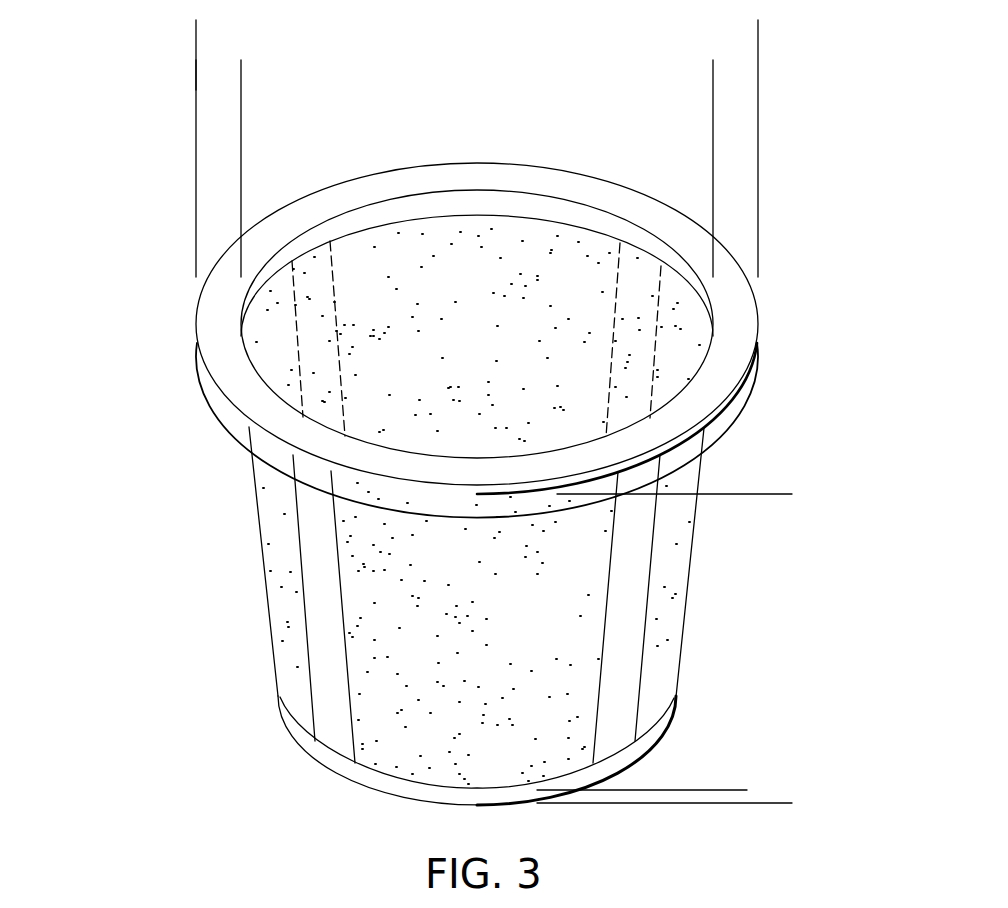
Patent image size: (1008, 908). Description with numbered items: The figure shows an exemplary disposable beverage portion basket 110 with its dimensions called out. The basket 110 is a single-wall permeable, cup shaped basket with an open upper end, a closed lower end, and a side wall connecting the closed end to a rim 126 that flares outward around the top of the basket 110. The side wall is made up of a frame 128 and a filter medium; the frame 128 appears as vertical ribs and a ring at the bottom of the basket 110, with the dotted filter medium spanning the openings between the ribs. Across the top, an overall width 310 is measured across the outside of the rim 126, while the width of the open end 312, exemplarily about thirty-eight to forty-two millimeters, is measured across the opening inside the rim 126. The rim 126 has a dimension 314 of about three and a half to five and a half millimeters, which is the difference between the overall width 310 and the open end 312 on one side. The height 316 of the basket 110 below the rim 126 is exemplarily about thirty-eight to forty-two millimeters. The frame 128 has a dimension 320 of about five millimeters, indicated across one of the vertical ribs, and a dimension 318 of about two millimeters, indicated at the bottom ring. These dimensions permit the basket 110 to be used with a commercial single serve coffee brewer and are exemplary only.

The basket 110 is at (439, 484).
The rim 126 is at (736, 330).
The frame 128 is at (325, 645).
The overall width dimension 310 is at (196, 33).
The width of the open end 312 is at (241, 72).
The rim dimension 314 is at (150, 72).
The height 316 is at (785, 494).
The frame dimension 318 is at (740, 755).
The frame dimension 320 is at (397, 582).